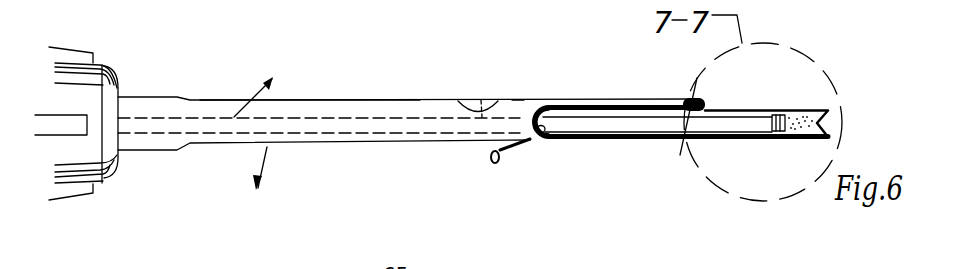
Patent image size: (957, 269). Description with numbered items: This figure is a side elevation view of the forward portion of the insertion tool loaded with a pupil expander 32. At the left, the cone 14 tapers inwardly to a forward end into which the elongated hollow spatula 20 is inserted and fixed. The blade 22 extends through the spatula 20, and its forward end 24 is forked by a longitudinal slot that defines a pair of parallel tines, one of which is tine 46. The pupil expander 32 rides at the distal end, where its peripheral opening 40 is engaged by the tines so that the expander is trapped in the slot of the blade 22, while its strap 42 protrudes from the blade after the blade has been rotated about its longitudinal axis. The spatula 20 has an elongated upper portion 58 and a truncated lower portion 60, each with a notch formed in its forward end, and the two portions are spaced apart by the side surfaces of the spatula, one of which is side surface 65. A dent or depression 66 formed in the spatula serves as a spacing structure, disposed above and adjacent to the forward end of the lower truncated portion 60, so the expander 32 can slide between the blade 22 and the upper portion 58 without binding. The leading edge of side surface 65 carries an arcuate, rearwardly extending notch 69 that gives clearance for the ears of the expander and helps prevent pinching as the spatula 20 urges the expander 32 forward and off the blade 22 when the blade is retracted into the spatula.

The cone 14 is at (110, 68).
The hollow spatula 20 is at (255, 178).
The blade 22 is at (238, 113).
The forward end 24 is at (625, 147).
The pupil expander 32 is at (794, 98).
The peripheral opening 40 is at (826, 122).
The strap 42 is at (492, 162).
The tine 46 is at (597, 132).
The elongated upper portion 58 is at (597, 101).
The truncated lower portion 60 is at (302, 147).
The side surface 65 is at (518, 112).
The depression 66 is at (481, 100).
The notch 69 is at (543, 142).